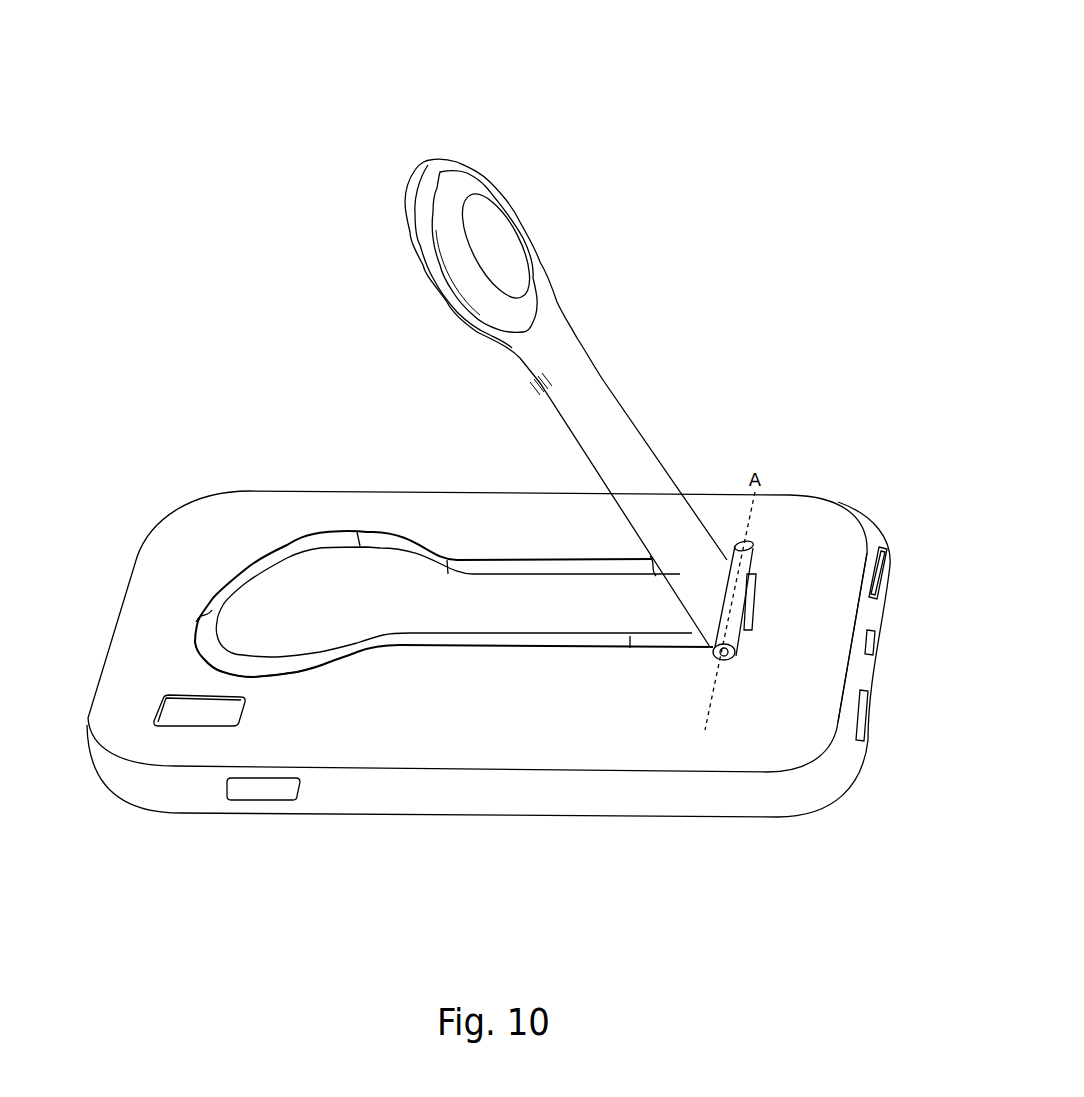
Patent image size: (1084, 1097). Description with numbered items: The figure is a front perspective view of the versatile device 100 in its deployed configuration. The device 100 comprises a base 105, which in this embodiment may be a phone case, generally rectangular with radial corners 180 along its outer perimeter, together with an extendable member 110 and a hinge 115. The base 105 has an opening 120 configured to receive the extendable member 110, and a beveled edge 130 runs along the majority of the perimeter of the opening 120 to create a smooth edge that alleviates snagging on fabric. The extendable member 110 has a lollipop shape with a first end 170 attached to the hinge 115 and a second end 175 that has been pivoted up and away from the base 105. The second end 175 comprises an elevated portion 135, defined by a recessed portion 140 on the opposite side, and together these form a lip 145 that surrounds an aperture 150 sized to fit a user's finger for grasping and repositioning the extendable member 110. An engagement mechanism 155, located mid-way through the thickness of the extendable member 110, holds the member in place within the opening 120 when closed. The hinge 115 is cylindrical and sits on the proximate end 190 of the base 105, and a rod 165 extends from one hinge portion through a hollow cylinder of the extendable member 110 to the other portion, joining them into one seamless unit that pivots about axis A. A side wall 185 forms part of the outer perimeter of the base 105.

The versatile device 100 is at (737, 89).
The base 105 is at (507, 735).
The extendable member 110 is at (610, 425).
The hinge 115 is at (745, 547).
The opening 120 is at (510, 605).
The beveled edge 130 is at (325, 662).
The elevated portion 135 is at (480, 266).
The recessed portion 140 is at (519, 248).
The lip 145 is at (480, 192).
The aperture 150 is at (480, 234).
The engagement mechanism 155 is at (555, 390).
The rod 165 is at (736, 652).
The first end 170 is at (713, 580).
The second end 175 is at (440, 160).
The radial corners 180 is at (192, 503).
The side wall 185 is at (148, 634).
The proximate end 190 is at (845, 610).